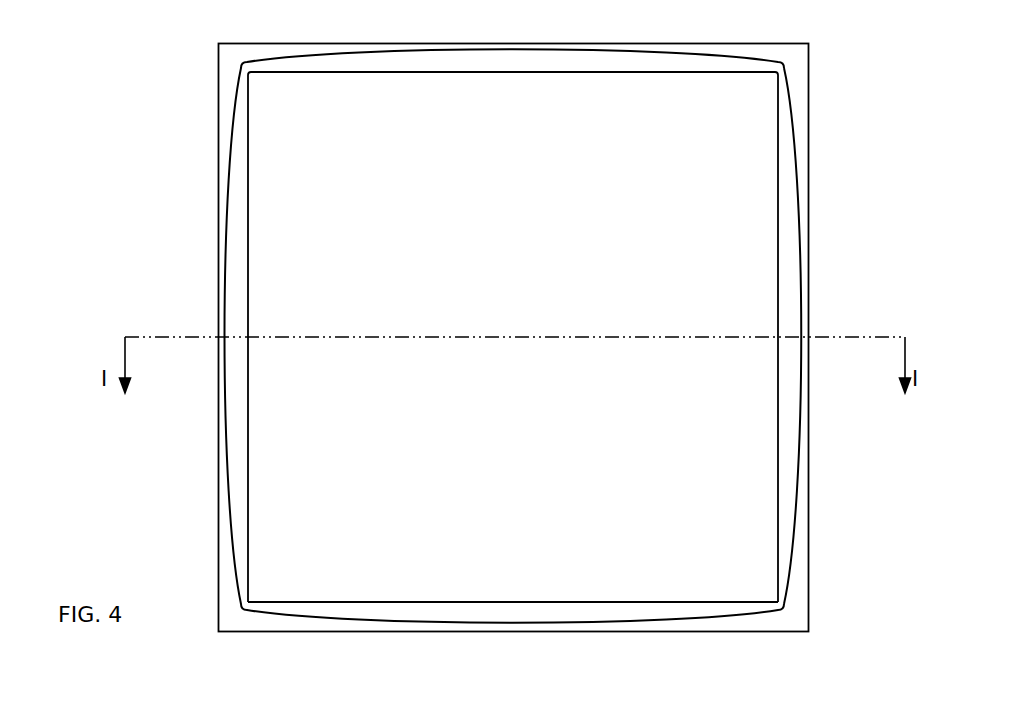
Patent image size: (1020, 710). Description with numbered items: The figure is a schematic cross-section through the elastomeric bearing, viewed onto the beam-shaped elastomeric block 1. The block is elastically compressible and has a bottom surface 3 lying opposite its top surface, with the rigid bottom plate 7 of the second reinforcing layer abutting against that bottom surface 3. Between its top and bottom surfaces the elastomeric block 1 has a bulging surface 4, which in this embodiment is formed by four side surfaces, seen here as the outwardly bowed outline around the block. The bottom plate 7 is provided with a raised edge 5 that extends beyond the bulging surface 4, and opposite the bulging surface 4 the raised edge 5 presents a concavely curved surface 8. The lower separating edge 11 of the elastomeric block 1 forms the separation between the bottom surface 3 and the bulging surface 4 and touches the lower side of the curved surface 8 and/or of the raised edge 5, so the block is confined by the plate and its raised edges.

The elastomeric block 1 is at (700, 145).
The bottom surface 3 is at (277, 300).
The bulging surface 4 is at (249, 144).
The raised edge 5 is at (800, 194).
The bottom plate 7 is at (217, 226).
The concavely curved surface 8 is at (790, 430).
The lower separating edge 11 is at (778, 273).